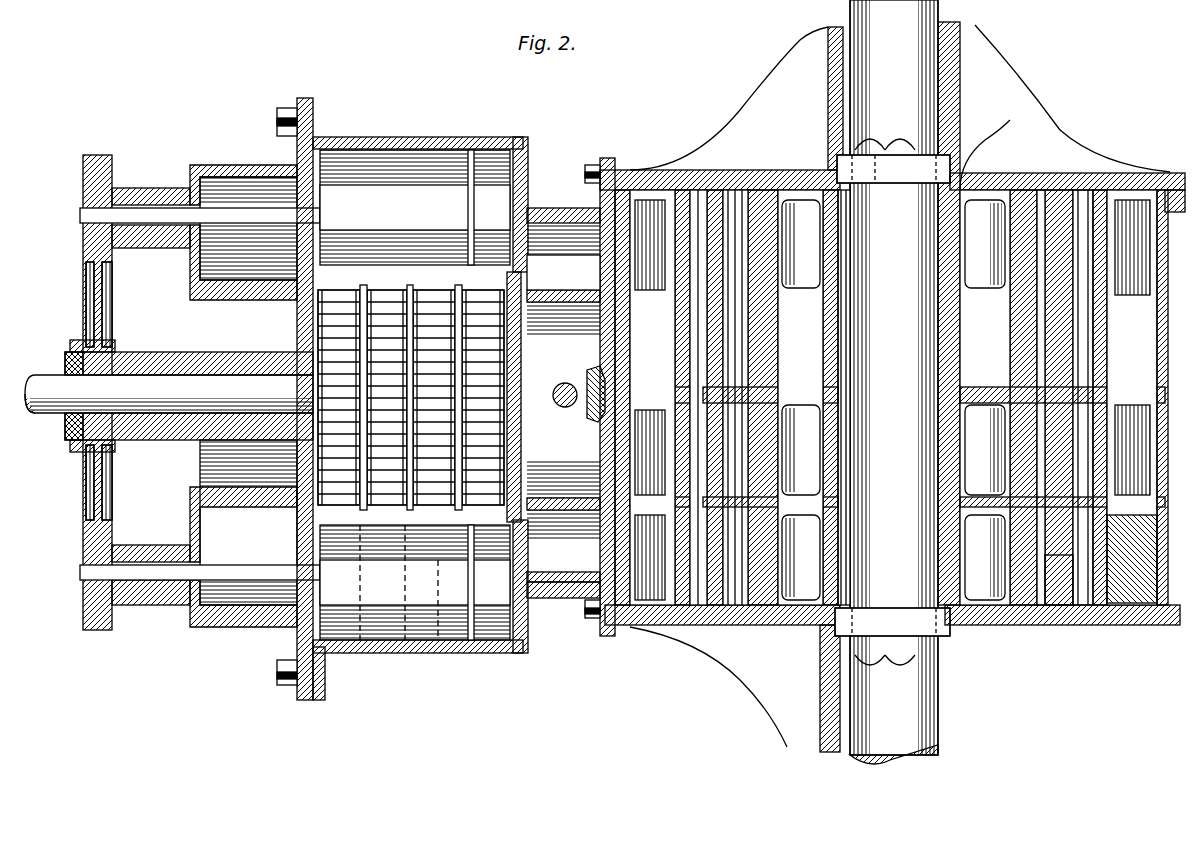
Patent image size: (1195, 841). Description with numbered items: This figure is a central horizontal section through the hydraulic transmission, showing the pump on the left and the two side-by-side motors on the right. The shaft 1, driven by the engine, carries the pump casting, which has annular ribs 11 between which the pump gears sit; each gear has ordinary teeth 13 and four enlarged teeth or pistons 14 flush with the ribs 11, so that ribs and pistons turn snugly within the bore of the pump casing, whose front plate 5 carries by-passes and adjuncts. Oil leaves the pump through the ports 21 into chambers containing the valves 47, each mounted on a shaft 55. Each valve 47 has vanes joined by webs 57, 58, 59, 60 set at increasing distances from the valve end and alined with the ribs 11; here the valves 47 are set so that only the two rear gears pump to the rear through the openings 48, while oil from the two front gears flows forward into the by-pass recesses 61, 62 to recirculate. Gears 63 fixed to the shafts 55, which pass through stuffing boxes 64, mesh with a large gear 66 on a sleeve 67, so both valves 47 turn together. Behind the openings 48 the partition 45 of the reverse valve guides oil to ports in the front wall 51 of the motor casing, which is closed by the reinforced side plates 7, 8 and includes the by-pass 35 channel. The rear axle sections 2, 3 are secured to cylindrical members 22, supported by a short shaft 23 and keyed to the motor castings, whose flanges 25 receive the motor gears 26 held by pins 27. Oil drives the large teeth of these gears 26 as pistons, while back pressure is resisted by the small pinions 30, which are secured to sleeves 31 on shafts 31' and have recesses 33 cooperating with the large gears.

The shaft 1 is at (45, 415).
The rear axle section 2 is at (945, 95).
The rear axle section 3 is at (945, 700).
The front plate 5 is at (300, 700).
The side plate 7 is at (660, 170).
The side plate 8 is at (672, 625).
The annular ribs 11 is at (318, 330).
The teeth 13 is at (500, 385).
The pistons 14 is at (510, 330).
The ports 21 is at (790, 190).
The cylindrical members 22 is at (850, 260).
The short shaft 23 is at (840, 155).
The flanges 25 is at (1085, 173).
The gears 26 is at (1020, 190).
The pins 27 is at (742, 190).
The small pinions 30 is at (1135, 540).
The sleeves 31 is at (674, 427).
The shafts 31' is at (1082, 607).
The recesses 33 is at (1125, 280).
The by-pass 35 is at (1172, 212).
The partition 45 is at (560, 208).
The valves 47 is at (405, 195).
The openings 48 is at (535, 262).
The front wall 51 is at (600, 258).
The shaft 55 is at (212, 208).
The web 57 is at (352, 640).
The web 58 is at (393, 640).
The web 59 is at (440, 640).
The web 60 is at (474, 245).
The by-pass chamber 61 is at (168, 560).
The by-pass chamber 62 is at (235, 165).
The gears 63 is at (112, 622).
The stuffing boxes 64 is at (172, 188).
The large gear 66 is at (112, 318).
The sleeve 67 is at (86, 300).